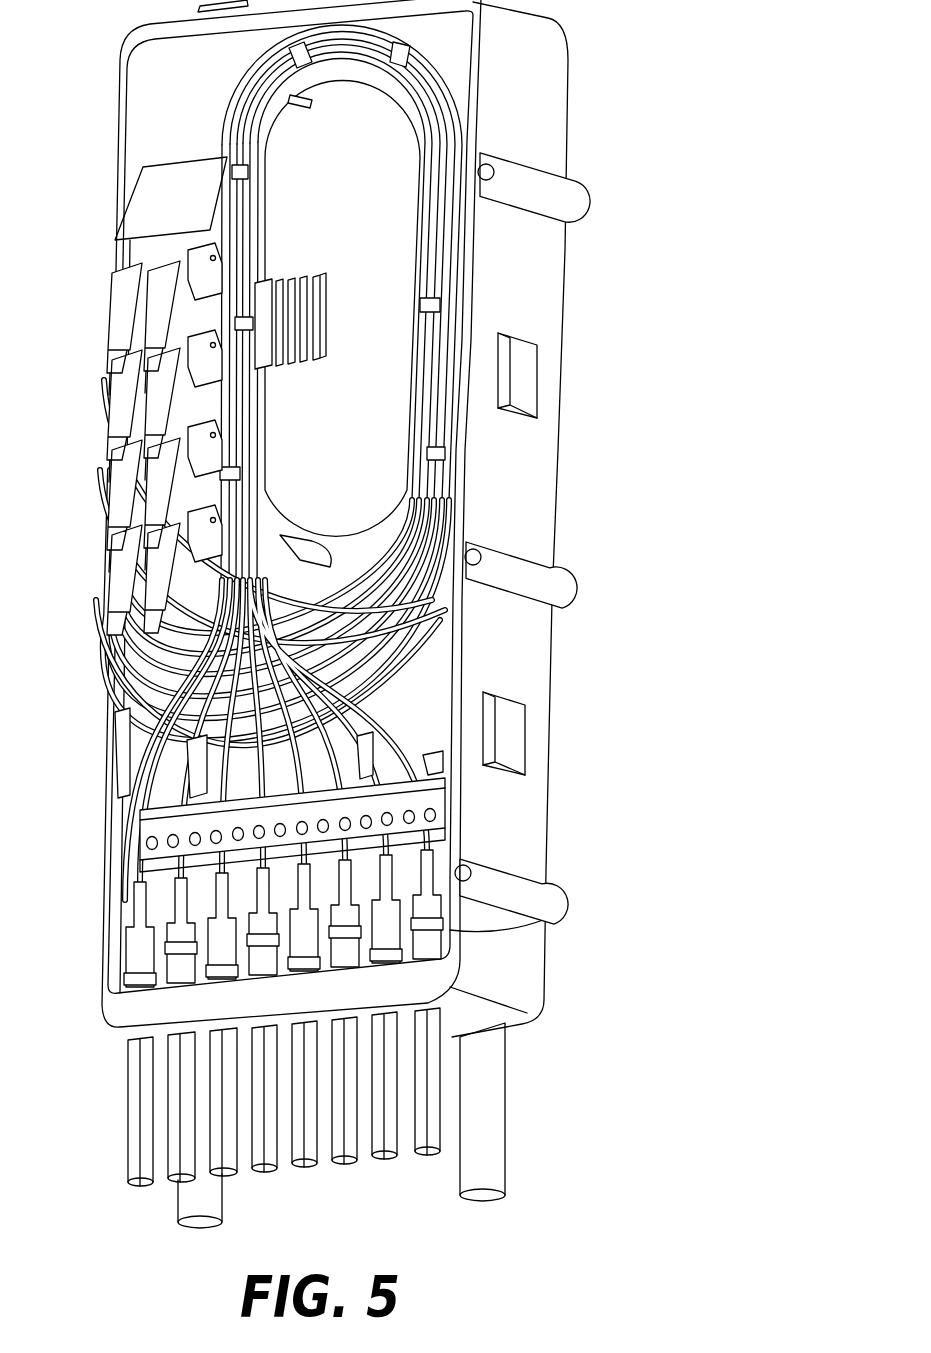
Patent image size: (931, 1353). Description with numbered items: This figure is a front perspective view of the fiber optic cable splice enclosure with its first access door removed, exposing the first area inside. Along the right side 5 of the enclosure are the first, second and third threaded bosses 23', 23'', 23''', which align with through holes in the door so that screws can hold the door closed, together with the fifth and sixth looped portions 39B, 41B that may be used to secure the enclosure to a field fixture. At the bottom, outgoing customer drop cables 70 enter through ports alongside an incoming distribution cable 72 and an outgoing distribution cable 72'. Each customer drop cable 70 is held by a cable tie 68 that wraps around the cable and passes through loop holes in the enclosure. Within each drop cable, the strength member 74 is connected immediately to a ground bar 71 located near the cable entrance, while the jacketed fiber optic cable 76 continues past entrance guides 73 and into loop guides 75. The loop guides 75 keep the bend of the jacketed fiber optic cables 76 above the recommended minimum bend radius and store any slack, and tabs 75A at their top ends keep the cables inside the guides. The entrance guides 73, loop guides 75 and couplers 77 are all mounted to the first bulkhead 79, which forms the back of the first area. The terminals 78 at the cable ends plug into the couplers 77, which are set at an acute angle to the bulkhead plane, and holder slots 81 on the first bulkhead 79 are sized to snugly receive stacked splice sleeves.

The right side 5 is at (524, 300).
The first threaded boss 23' is at (591, 191).
The second threaded boss 23'' is at (583, 580).
The third threaded boss 23''' is at (575, 896).
The fifth looped portion 39B is at (533, 392).
The sixth looped portion 41B is at (513, 740).
The cable tie 68 is at (170, 947).
The customer drop cable 70 is at (138, 1110).
The ground bar 71 is at (150, 842).
The incoming distribution cable 72 is at (520, 1112).
The outgoing distribution cable 72' is at (158, 1202).
The entrance guide 73 is at (193, 768).
The strength member 74 is at (143, 907).
The loop guide 75 is at (238, 170).
The tab 75A is at (240, 474).
The jacketed fiber optic cable 76 is at (140, 863).
The coupler 77 is at (180, 262).
The terminal 78 is at (118, 308).
The first bulkhead 79 is at (352, 444).
The holder slot 81 is at (342, 324).